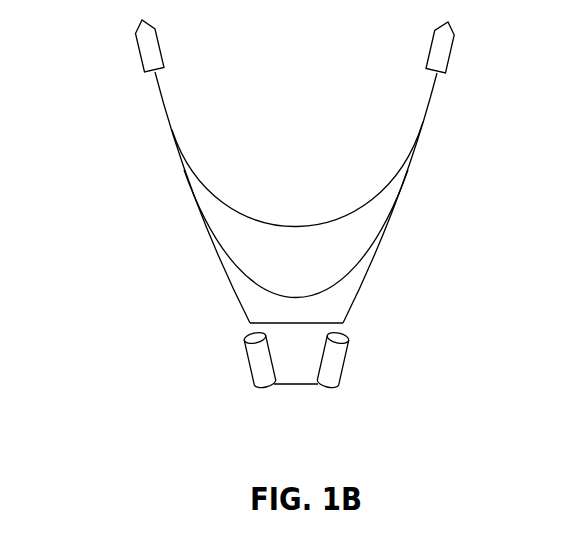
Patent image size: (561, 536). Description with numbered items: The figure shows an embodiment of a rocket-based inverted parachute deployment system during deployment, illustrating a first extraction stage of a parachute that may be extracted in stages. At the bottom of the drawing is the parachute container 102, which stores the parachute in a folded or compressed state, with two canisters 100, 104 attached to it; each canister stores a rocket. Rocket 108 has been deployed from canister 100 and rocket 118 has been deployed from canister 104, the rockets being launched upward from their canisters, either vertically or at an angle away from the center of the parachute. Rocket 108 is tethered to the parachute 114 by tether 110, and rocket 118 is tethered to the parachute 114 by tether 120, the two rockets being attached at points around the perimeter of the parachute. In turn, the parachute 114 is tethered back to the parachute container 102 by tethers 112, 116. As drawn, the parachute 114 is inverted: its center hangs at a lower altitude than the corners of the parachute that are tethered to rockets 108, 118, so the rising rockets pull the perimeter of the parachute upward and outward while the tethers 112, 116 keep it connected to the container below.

The canister 100 is at (252, 368).
The parachute container 102 is at (297, 386).
The canister 104 is at (337, 358).
The rocket 108 is at (138, 56).
The tether 110 is at (158, 97).
The tether 112 is at (230, 280).
The parachute 114 is at (323, 237).
The tether 116 is at (357, 288).
The rocket 118 is at (428, 51).
The tether 120 is at (430, 97).